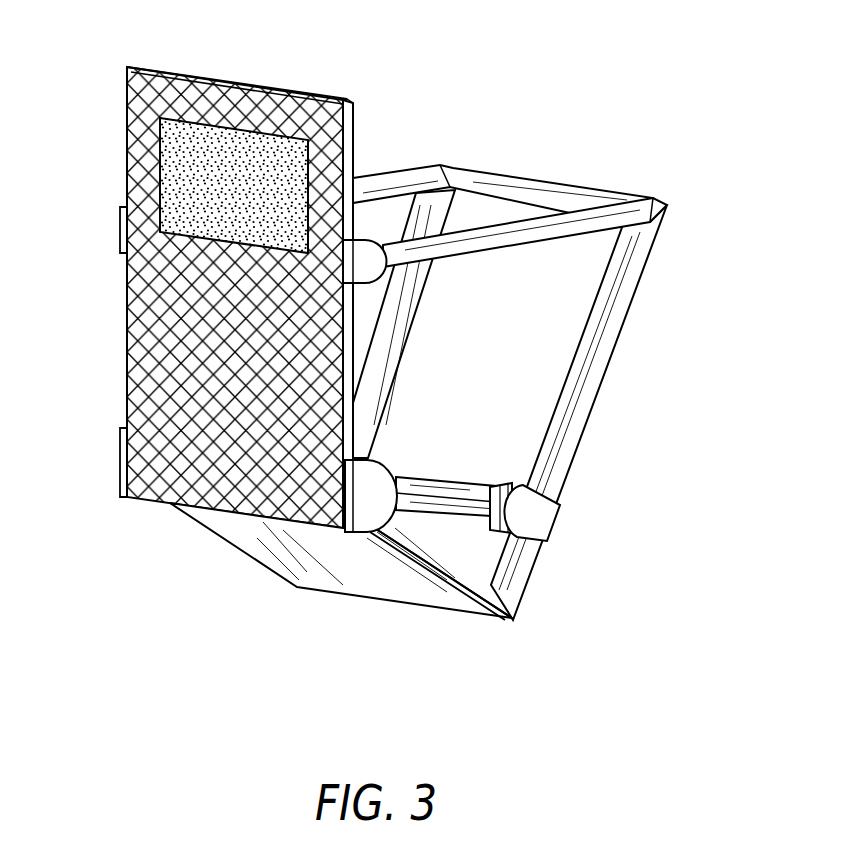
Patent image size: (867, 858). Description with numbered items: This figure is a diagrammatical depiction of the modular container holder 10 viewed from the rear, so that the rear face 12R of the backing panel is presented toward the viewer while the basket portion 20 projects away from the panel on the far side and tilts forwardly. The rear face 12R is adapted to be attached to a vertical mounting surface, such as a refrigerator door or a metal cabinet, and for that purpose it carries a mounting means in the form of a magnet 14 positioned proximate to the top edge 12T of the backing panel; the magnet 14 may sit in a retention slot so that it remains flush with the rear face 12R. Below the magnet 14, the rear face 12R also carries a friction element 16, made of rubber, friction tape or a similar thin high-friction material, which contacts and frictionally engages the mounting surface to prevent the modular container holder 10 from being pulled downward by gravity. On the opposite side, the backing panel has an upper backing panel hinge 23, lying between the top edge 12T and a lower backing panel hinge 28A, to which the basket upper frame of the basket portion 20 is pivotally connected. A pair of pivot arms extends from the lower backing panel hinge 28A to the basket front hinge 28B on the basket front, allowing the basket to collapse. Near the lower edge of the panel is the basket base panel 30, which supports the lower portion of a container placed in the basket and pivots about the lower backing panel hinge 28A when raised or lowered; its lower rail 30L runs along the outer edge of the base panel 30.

The modular container holder 10 is at (196, 668).
The rear face 12R is at (142, 100).
The top edge 12T is at (255, 83).
The magnet 14 is at (178, 166).
The friction element 16 is at (143, 316).
The basket portion 20 is at (668, 208).
The upper backing panel hinge 23 is at (367, 258).
The lower backing panel hinge 28A is at (545, 513).
The basket front hinge 28B is at (382, 480).
The basket base panel 30 is at (380, 600).
The tray lip rail 30L is at (463, 602).